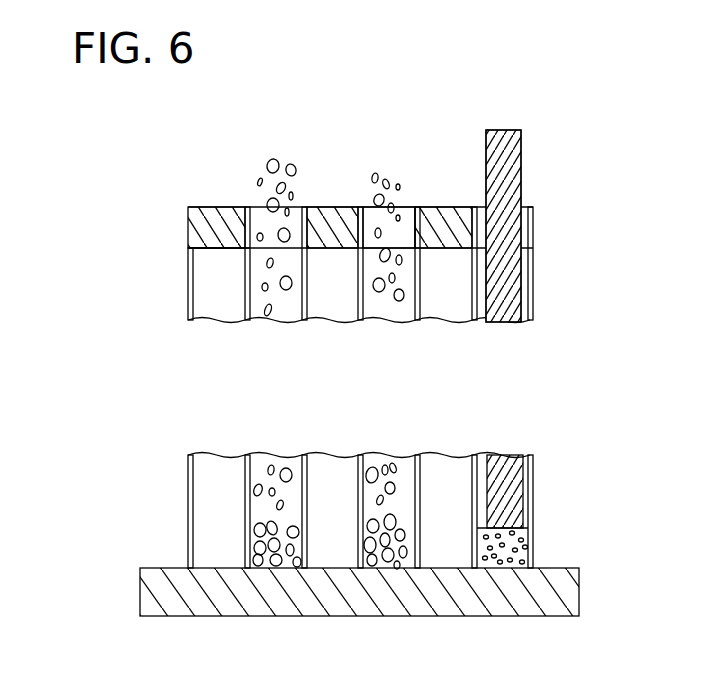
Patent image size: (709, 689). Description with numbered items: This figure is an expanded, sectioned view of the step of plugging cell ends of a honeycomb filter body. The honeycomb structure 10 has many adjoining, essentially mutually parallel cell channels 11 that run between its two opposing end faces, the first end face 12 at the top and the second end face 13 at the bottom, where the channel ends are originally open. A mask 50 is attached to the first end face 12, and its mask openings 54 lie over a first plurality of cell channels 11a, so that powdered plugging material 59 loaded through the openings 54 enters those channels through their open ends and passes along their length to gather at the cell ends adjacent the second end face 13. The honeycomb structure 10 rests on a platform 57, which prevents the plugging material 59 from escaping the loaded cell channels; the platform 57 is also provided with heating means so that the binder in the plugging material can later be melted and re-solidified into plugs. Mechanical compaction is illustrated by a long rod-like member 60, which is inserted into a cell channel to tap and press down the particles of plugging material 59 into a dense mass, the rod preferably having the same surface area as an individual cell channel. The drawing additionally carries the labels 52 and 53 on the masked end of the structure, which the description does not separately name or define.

The honeycomb structure 10 is at (313, 301).
The cell channels 11 is at (213, 307).
The first plurality of cell channels 11a is at (480, 303).
The first end face 12 is at (187, 246).
The second end face 13 is at (187, 568).
The mask 50 is at (316, 179).
The mask body portion 52 is at (212, 207).
The top surface of barrier rib 53 is at (213, 250).
The mask openings 54 is at (405, 213).
The platform 57 is at (570, 600).
The powdered plugging material 59 is at (280, 560).
The rod-like member 60 is at (508, 180).